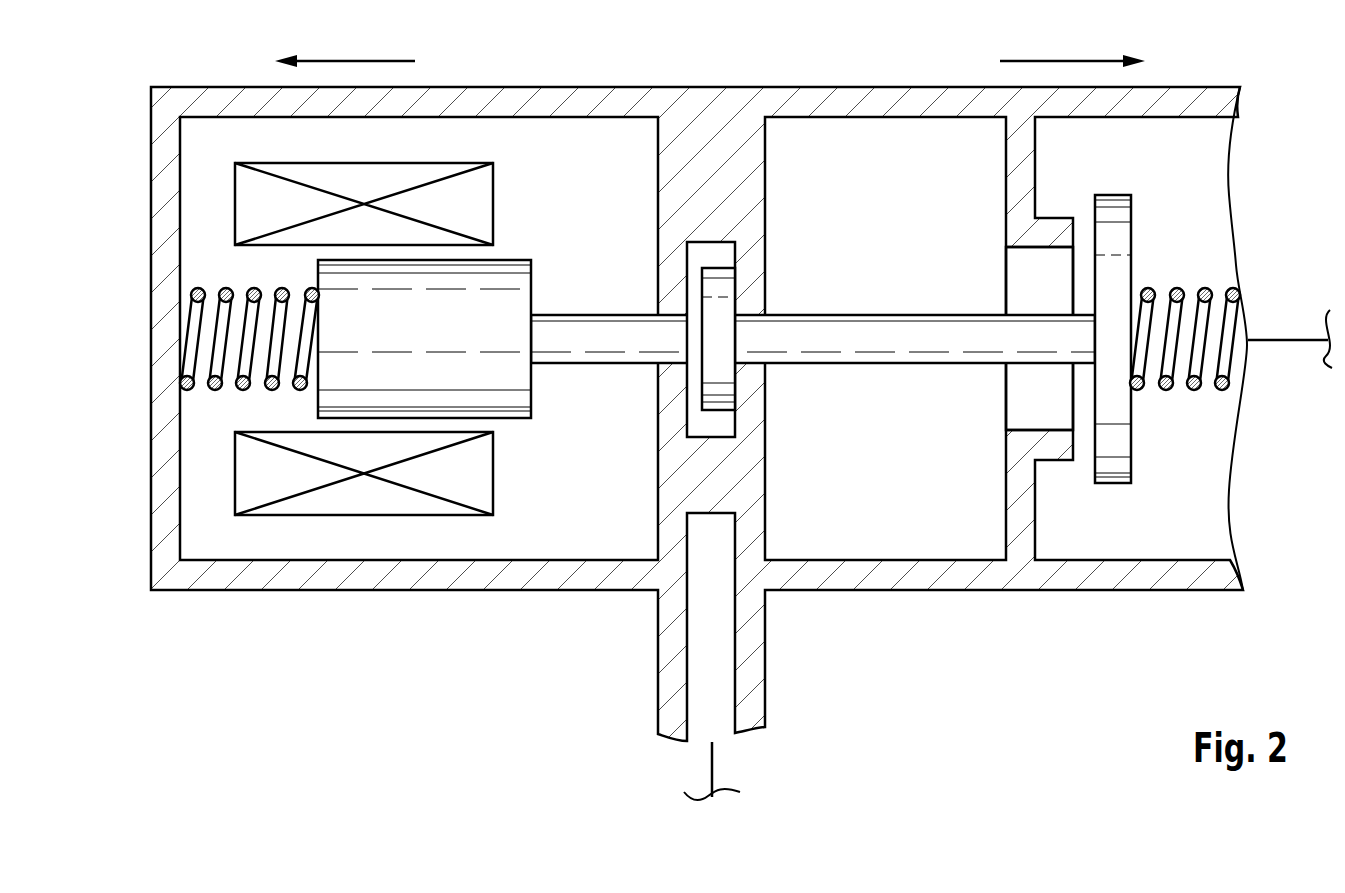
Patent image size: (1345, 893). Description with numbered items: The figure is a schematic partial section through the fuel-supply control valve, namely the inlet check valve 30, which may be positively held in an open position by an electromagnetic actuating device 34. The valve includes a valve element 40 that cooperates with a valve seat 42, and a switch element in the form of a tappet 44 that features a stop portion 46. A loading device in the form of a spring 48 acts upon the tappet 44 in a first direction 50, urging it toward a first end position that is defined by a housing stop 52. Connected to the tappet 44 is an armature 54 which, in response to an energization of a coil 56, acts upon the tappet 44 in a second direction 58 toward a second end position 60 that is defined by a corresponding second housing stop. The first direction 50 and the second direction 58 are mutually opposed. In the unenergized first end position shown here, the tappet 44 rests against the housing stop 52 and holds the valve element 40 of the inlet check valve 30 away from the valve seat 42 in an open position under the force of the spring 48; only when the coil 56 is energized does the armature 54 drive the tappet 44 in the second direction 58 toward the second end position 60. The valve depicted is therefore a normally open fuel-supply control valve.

The inlet check valve 30 is at (1214, 75).
The electromagnetic actuating device 34 is at (360, 682).
The valve element 40 is at (1133, 212).
The valve seat 42 is at (1080, 445).
The tappet 44 is at (573, 366).
The stop portion 46 is at (722, 393).
The spring 48 is at (192, 291).
The first direction 50 is at (1076, 61).
The housing stop 52 is at (708, 344).
The armature 54 is at (533, 280).
The coil 56 is at (495, 176).
The second direction 58 is at (343, 61).
The second end position 60 is at (690, 258).